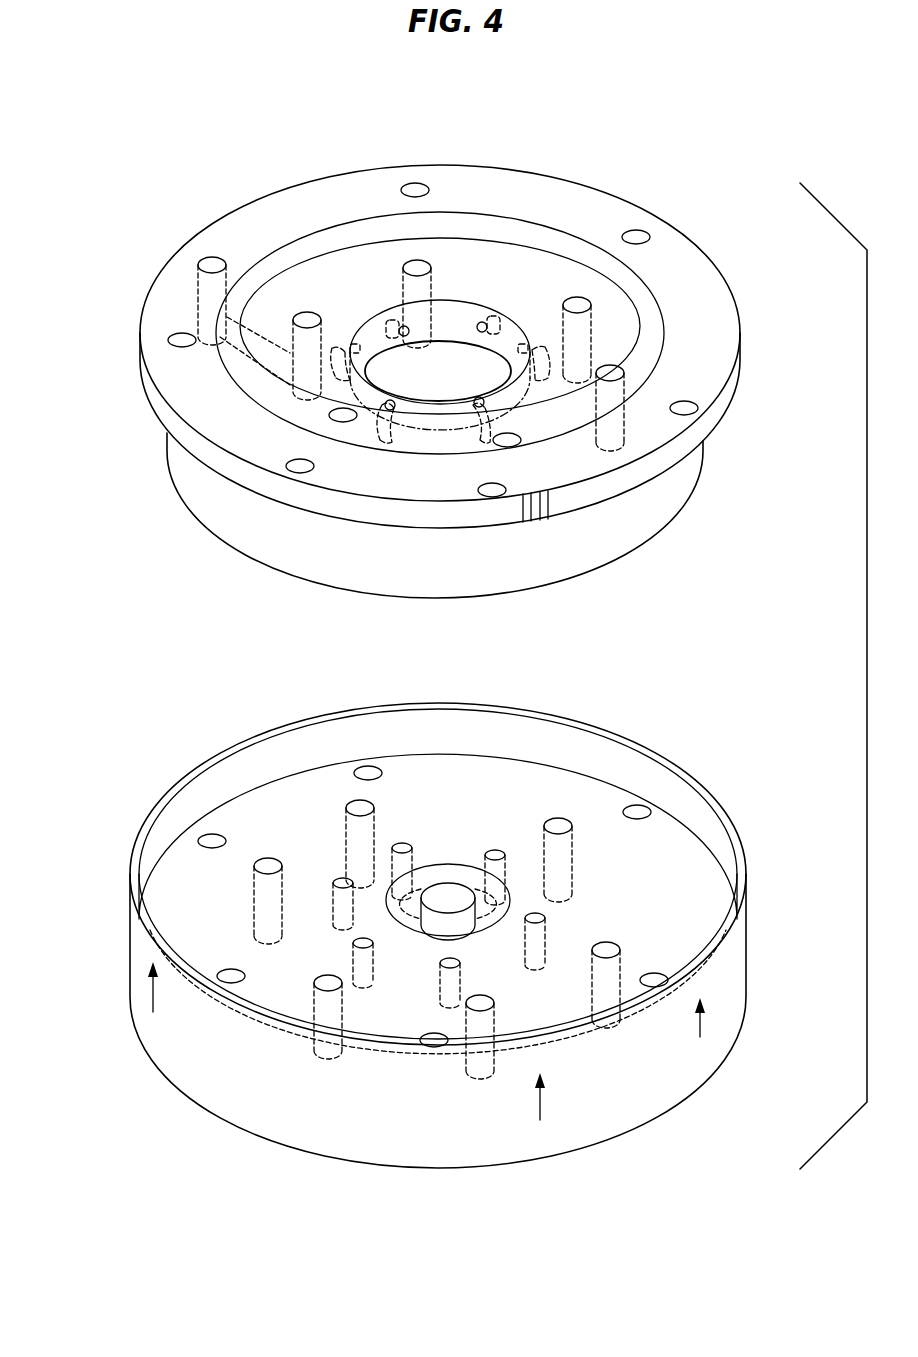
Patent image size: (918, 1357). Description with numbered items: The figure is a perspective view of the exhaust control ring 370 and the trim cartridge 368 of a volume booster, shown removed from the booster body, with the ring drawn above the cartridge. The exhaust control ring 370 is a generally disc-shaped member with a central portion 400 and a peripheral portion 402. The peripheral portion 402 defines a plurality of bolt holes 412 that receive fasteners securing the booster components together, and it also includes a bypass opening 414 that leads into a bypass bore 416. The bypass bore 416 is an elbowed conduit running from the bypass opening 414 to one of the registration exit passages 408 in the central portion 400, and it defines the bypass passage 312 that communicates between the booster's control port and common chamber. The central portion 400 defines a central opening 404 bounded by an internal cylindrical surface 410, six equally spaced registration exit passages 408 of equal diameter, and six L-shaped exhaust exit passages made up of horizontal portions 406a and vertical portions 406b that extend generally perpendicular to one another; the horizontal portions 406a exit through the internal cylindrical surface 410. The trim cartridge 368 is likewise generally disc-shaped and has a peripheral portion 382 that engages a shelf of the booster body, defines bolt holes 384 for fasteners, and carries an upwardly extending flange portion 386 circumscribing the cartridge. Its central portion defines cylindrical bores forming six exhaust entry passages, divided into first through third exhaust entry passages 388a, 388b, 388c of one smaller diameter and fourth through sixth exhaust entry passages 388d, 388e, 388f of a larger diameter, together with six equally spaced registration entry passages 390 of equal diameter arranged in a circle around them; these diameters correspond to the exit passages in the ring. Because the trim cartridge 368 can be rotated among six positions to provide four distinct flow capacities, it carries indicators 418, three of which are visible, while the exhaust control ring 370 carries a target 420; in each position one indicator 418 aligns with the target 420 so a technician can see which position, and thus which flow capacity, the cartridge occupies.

The exhaust control ring 370 is at (728, 300).
The peripheral portion 402 is at (685, 250).
The central portion 400 is at (543, 268).
The central opening 404 is at (447, 318).
The internal cylindrical surface 410 is at (474, 318).
The horizontal portions 406a is at (392, 325).
The vertical portions 406b is at (530, 396).
The registration exit passages 408 is at (414, 269).
The bypass opening 414 is at (212, 262).
The bypass bore 416 is at (169, 327).
The bypass passage 312 is at (228, 318).
The bolt holes 412 is at (415, 188).
The target 420 is at (547, 518).
The trim cartridge 368 is at (748, 820).
The flange portion 386 is at (218, 758).
The peripheral portion 382 is at (602, 785).
The bolt holes 384 is at (212, 838).
The registration entry passages 390 is at (268, 865).
The first exhaust entry passage 388a is at (450, 963).
The second exhaust entry passage 388b is at (363, 943).
The third exhaust entry passage 388c is at (343, 882).
The fourth exhaust entry passage 388d is at (402, 847).
The fifth exhaust entry passage 388e is at (495, 854).
The sixth exhaust entry passage 388f is at (537, 918).
The indicators 418 is at (150, 1000).